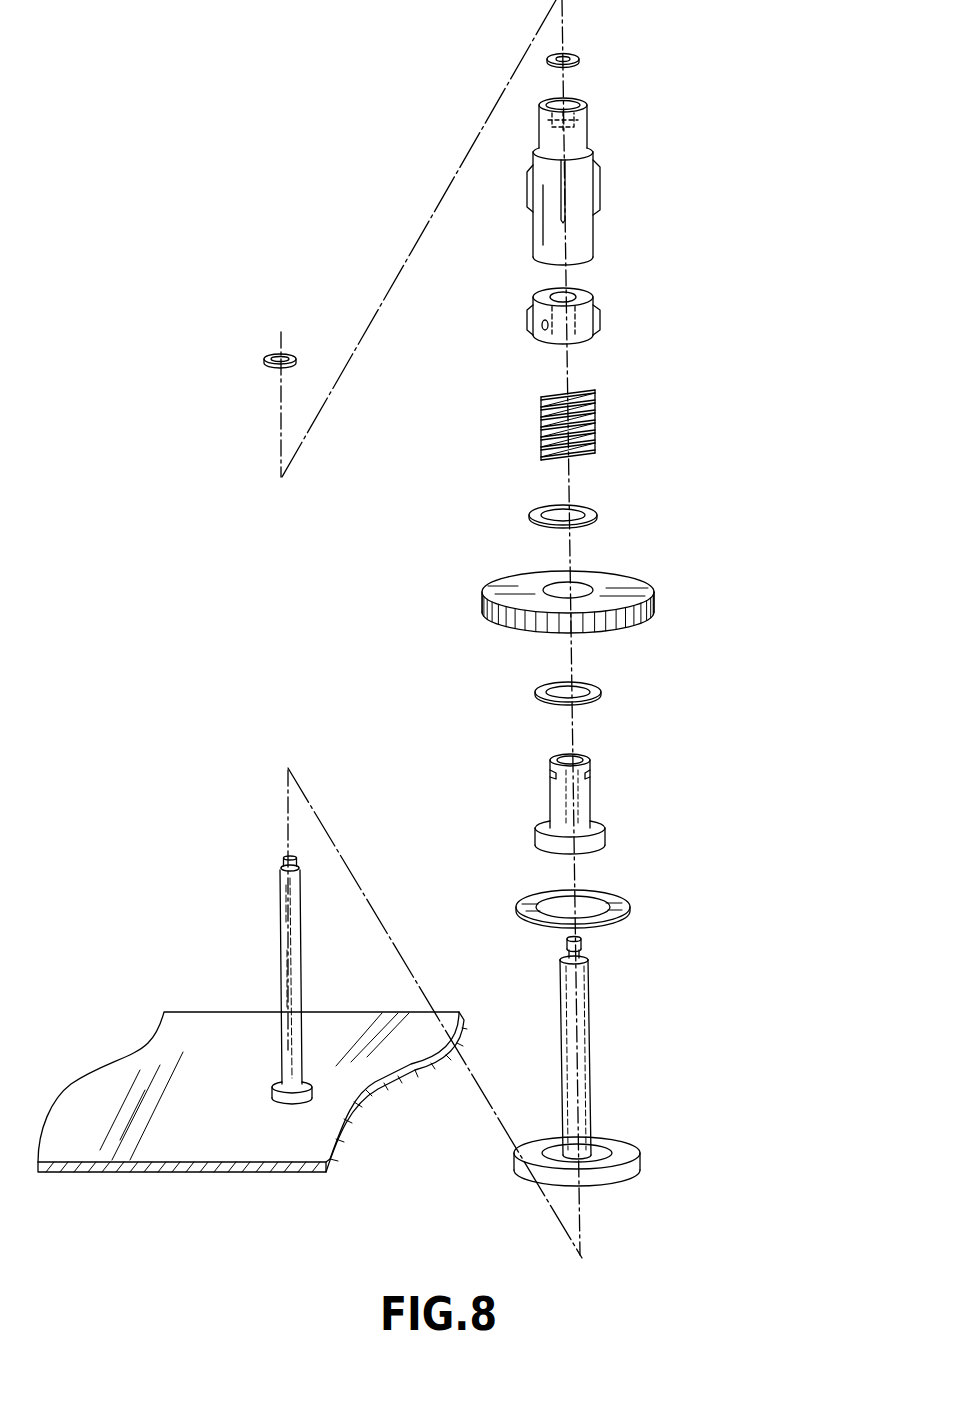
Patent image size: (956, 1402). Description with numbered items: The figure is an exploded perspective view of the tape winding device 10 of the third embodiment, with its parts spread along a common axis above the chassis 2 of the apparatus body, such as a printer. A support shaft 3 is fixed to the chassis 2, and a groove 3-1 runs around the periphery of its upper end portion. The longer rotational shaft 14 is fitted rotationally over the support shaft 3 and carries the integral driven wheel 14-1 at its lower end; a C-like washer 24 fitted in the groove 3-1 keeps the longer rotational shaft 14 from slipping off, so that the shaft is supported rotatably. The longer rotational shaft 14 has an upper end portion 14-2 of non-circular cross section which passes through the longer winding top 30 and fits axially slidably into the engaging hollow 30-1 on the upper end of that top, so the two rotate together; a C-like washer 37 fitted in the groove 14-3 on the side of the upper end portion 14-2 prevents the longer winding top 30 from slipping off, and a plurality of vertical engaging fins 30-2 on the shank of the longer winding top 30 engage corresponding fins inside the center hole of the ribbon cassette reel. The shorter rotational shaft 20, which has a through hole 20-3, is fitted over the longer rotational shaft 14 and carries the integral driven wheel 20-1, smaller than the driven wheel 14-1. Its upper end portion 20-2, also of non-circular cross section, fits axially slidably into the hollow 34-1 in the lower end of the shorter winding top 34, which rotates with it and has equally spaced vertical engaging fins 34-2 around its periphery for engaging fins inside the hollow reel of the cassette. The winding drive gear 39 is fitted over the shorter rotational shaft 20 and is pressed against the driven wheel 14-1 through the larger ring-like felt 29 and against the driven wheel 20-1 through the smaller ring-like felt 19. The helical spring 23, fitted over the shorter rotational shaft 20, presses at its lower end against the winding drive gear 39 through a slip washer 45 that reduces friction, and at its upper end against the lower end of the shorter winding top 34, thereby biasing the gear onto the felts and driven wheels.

The chassis 2 is at (195, 1027).
The support shaft 3 is at (257, 960).
The groove 3-1 is at (285, 861).
The tape winding device 10 is at (698, 270).
The longer rotational shaft 14 is at (597, 1062).
The driven wheel 14-1 is at (642, 1162).
The upper end portion 14-2 is at (563, 962).
The groove 14-3 is at (583, 946).
The smaller ring-like felt 19 is at (602, 690).
The shorter rotational shaft 20 is at (572, 791).
The driven wheel 20-1 is at (608, 831).
The upper end portion 20-2 is at (548, 773).
The through hole 20-3 is at (583, 757).
The helical spring 23 is at (597, 418).
The C-like washer 24 is at (262, 358).
The larger ring-like felt 29 is at (635, 906).
The longer winding top 30 is at (617, 181).
The engaging hollow 30-1 is at (572, 133).
The engaging fins 30-2 is at (603, 183).
The shorter winding top 34 is at (562, 332).
The hollow 34-1 is at (544, 341).
The engaging fins 34-2 is at (598, 315).
The C-like washer 37 is at (580, 58).
The winding drive gear 39 is at (652, 596).
The slip washer 45 is at (600, 512).